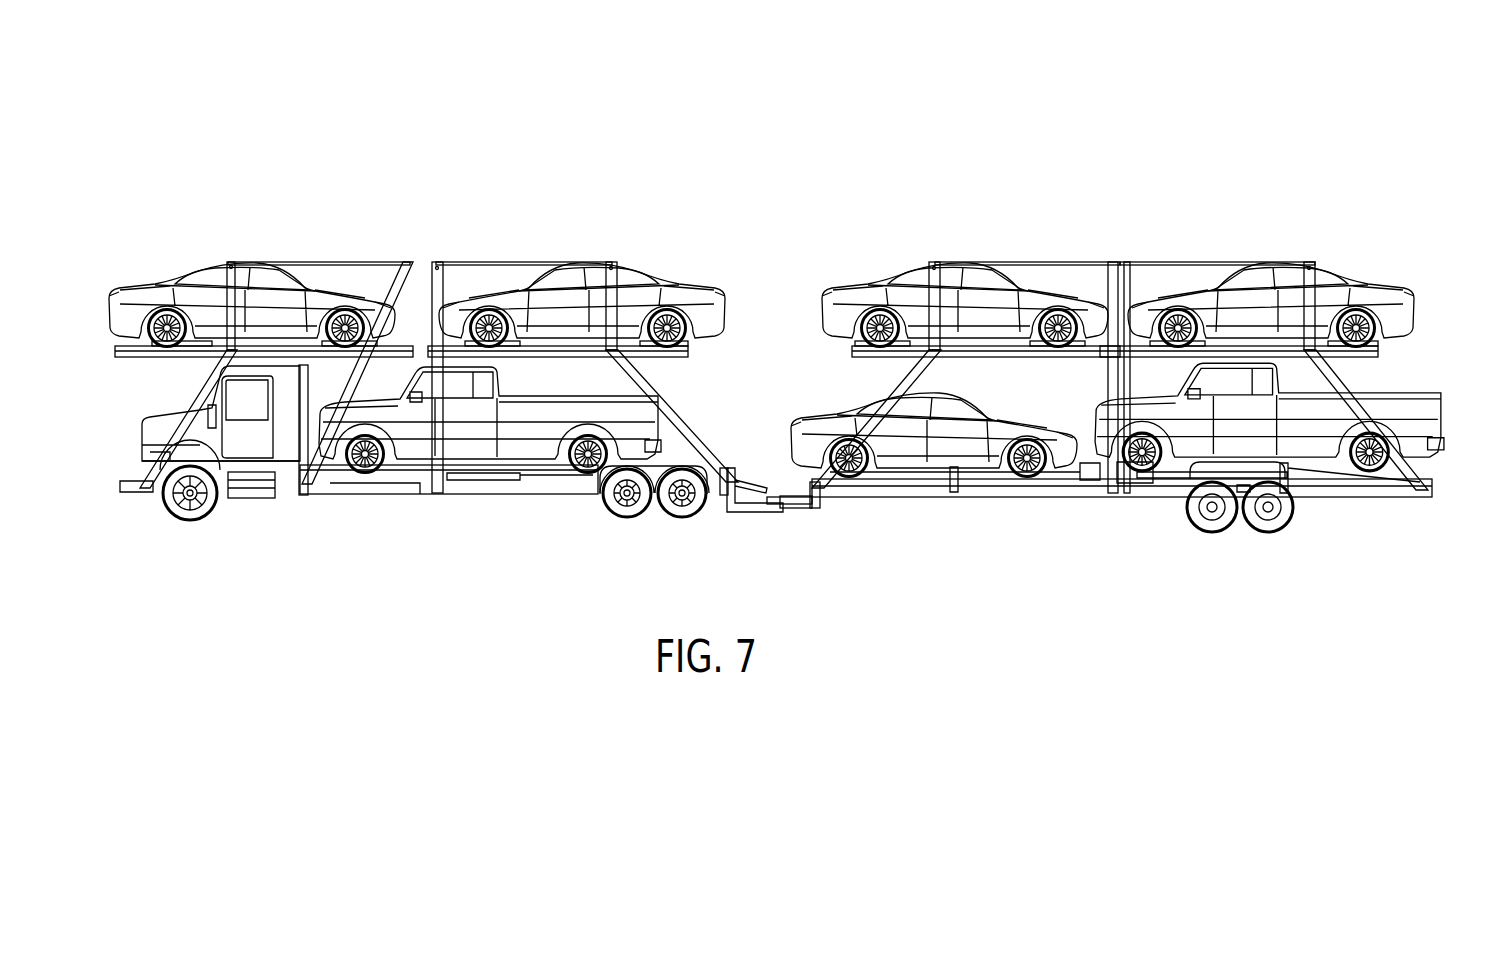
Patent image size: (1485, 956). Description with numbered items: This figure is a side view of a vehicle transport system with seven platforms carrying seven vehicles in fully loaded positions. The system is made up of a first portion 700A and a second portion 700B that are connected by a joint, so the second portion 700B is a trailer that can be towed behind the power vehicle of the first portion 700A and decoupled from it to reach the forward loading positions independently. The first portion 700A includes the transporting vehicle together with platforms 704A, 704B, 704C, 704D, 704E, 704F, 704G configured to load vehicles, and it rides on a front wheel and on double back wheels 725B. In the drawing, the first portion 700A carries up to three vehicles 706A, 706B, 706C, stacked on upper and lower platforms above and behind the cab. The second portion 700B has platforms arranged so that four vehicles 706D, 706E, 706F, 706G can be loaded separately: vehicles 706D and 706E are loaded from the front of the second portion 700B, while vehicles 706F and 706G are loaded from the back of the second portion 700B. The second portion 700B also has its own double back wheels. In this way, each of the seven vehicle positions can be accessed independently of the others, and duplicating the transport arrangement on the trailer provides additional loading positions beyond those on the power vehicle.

The first portion 700A is at (366, 148).
The second portion 700B is at (1098, 148).
The platform 704A is at (403, 464).
The platform 704B is at (205, 338).
The platform 704C is at (635, 338).
The platform 704D is at (906, 486).
The platform 704E is at (911, 340).
The platform 704F is at (1338, 338).
The platform 704G is at (1335, 462).
The vehicle 706A is at (483, 443).
The vehicle 706B is at (216, 312).
The vehicle 706C is at (632, 292).
The vehicle 706D is at (815, 456).
The vehicle 706E is at (955, 311).
The vehicle 706F is at (1333, 291).
The vehicle 706G is at (1418, 427).
The double back wheels 725B is at (694, 508).